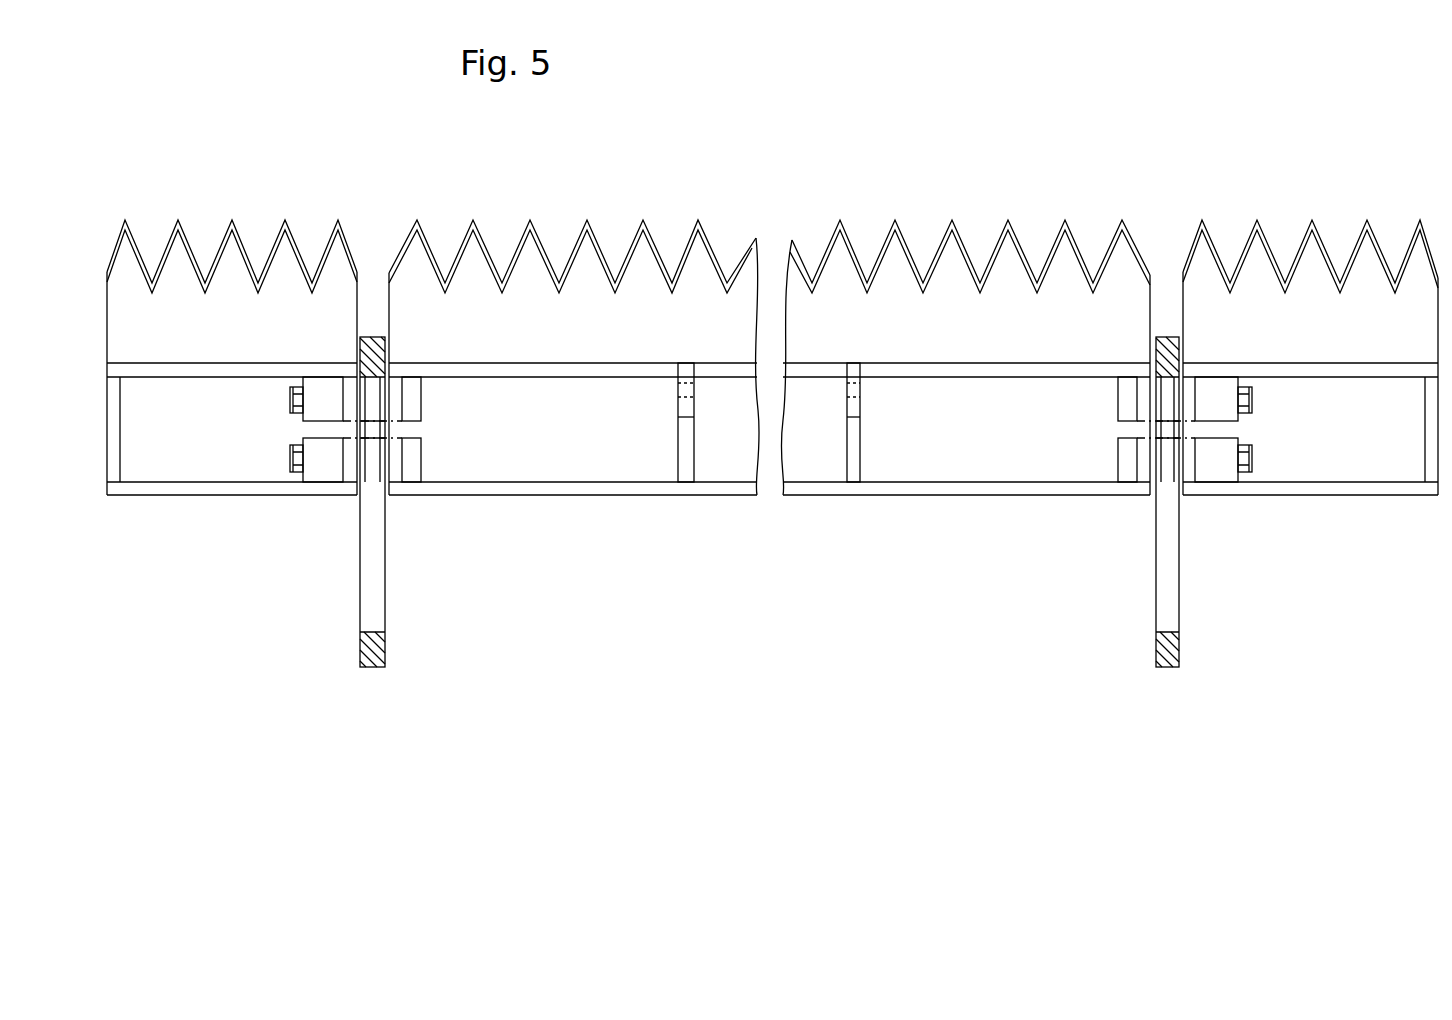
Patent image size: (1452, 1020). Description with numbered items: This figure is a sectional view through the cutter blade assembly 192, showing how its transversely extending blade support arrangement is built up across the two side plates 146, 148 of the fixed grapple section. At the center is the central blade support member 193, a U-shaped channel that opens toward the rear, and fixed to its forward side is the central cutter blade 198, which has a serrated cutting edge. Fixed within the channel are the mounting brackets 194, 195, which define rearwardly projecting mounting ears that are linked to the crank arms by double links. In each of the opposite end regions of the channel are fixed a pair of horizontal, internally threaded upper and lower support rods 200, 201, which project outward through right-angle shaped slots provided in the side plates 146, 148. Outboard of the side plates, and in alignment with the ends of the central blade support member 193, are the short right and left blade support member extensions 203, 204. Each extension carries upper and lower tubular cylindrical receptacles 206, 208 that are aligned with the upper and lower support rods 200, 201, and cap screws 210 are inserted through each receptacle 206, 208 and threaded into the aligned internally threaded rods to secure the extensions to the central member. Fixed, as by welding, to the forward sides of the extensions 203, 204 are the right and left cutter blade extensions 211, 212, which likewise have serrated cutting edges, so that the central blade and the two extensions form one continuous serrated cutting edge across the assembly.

The left cutter blade extension 212 is at (203, 329).
The left blade support member extension 204 is at (187, 460).
The central blade support member 193 is at (590, 435).
The central cutter blade 198 is at (976, 327).
The right cutter blade extension 211 is at (1350, 330).
The right blade support member extension 203 is at (1386, 464).
The mounting bracket 195 is at (687, 467).
The mounting bracket 194 is at (862, 466).
The side plate 148 is at (362, 647).
The side plate 146 is at (1177, 647).
The upper tubular cylindrical receptacle 206 is at (323, 387).
The lower tubular cylindrical receptacle 208 is at (326, 482).
The upper support rod 200 is at (413, 387).
The lower support rod 201 is at (413, 482).
The cap screws 210 is at (290, 463).
The cutter blade assembly 192 is at (909, 607).